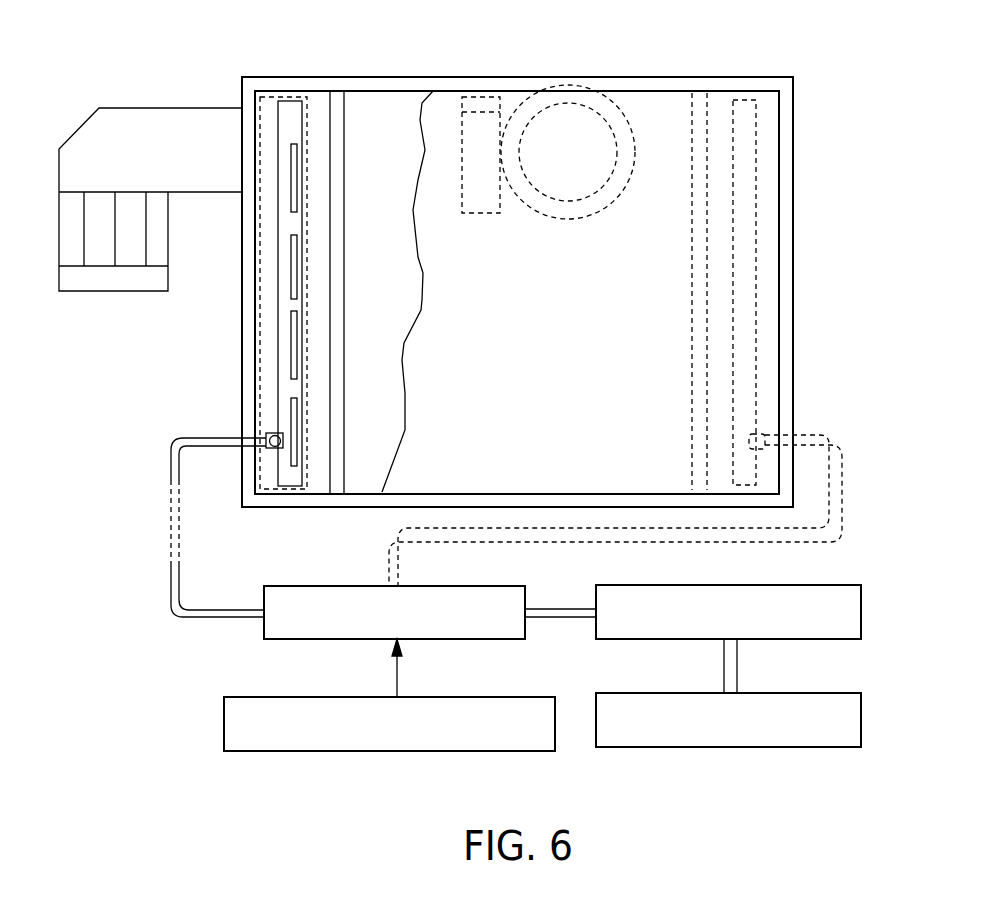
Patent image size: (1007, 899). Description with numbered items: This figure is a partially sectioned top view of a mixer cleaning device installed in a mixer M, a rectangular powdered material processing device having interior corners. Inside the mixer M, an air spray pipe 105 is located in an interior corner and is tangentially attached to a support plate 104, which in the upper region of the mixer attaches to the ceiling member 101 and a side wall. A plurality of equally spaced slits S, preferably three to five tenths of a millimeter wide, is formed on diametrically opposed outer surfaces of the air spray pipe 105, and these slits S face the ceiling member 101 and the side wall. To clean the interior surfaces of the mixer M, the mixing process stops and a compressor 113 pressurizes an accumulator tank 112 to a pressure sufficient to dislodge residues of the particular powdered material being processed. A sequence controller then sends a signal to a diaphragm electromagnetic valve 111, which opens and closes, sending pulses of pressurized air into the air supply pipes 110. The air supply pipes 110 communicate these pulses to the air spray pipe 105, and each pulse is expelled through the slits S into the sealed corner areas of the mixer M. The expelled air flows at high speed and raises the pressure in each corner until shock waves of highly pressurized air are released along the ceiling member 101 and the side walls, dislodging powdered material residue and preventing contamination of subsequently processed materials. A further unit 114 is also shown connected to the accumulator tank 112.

The ceiling member 101 is at (663, 110).
The mixer M is at (785, 260).
The support plate 104 is at (271, 97).
The air spray pipe 105 is at (288, 120).
The slit S is at (291, 200).
The air supply pipe 110 is at (264, 432).
The diaphragm electromagnetic valve 111 is at (302, 627).
The accumulator tank 112 is at (830, 600).
The compressor 113 is at (297, 735).
The memory / output unit 114 is at (830, 712).